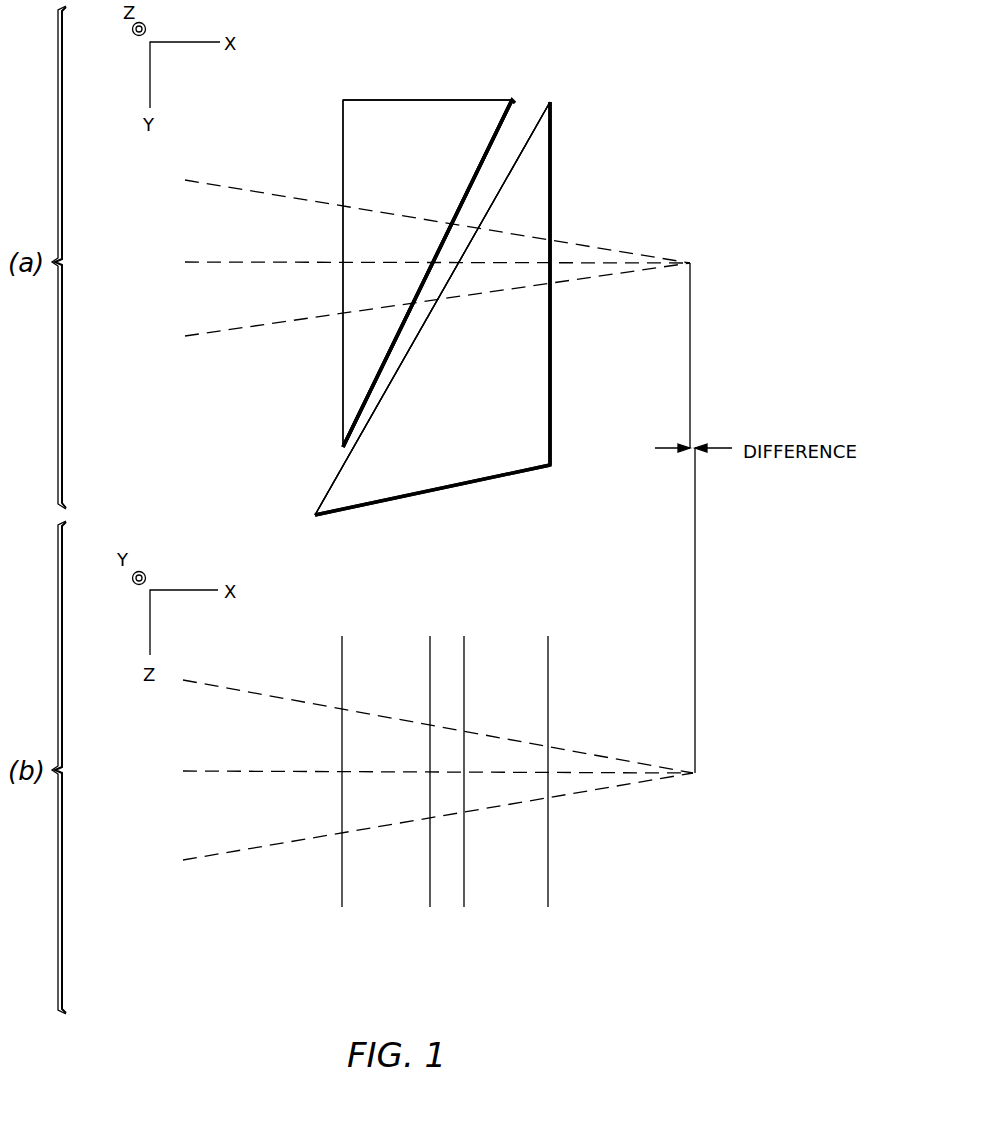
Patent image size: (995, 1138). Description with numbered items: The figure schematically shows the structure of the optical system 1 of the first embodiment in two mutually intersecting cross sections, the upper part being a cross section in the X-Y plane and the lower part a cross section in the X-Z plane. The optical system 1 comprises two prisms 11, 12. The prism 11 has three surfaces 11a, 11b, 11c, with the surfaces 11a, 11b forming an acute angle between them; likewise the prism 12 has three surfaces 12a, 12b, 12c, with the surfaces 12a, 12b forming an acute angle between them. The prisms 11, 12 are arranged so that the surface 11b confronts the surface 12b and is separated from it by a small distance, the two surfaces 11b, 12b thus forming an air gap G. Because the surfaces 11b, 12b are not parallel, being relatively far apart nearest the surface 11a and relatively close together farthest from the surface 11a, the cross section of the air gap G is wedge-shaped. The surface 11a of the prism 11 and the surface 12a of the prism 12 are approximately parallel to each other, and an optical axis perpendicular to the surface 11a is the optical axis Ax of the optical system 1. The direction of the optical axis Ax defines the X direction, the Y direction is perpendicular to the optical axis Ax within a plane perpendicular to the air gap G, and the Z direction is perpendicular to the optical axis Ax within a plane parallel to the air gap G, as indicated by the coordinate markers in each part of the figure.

The optical system 1 is at (619, 583).
The prism 11 is at (500, 467).
The surface 11a is at (551, 358).
The surface 11b is at (515, 161).
The surface 11c is at (433, 494).
The prism 12 is at (405, 103).
The surface 12a is at (343, 140).
The surface 12b is at (512, 104).
The surface 12c is at (367, 100).
The air gap G is at (539, 93).
The optical axis Ax is at (250, 261).